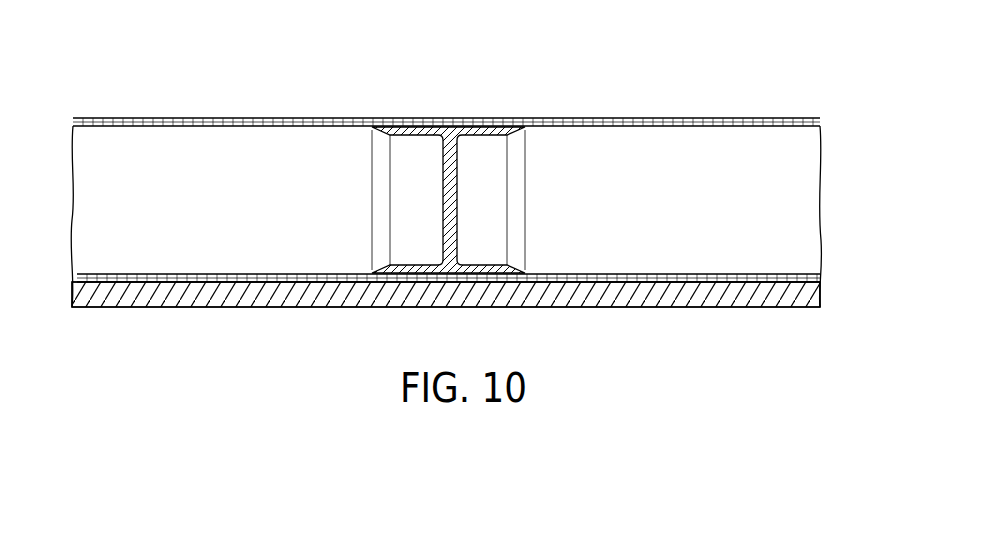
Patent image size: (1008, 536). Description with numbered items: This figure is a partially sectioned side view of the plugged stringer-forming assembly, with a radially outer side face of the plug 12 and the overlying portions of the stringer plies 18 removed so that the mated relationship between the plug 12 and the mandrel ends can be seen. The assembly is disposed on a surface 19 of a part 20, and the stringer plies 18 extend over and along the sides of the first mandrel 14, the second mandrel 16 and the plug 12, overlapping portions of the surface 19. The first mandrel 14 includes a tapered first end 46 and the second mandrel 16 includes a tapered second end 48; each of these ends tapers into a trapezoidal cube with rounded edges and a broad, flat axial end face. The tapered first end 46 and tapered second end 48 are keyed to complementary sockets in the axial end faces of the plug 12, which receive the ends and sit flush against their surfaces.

The plug 12 is at (449, 128).
The first mandrel 14 is at (212, 153).
The second mandrel 16 is at (665, 153).
The stringer plies 18 is at (780, 114).
The surface 19 is at (773, 274).
The part 20 is at (769, 310).
The tapered first end 46 is at (416, 156).
The tapered second end 48 is at (483, 156).